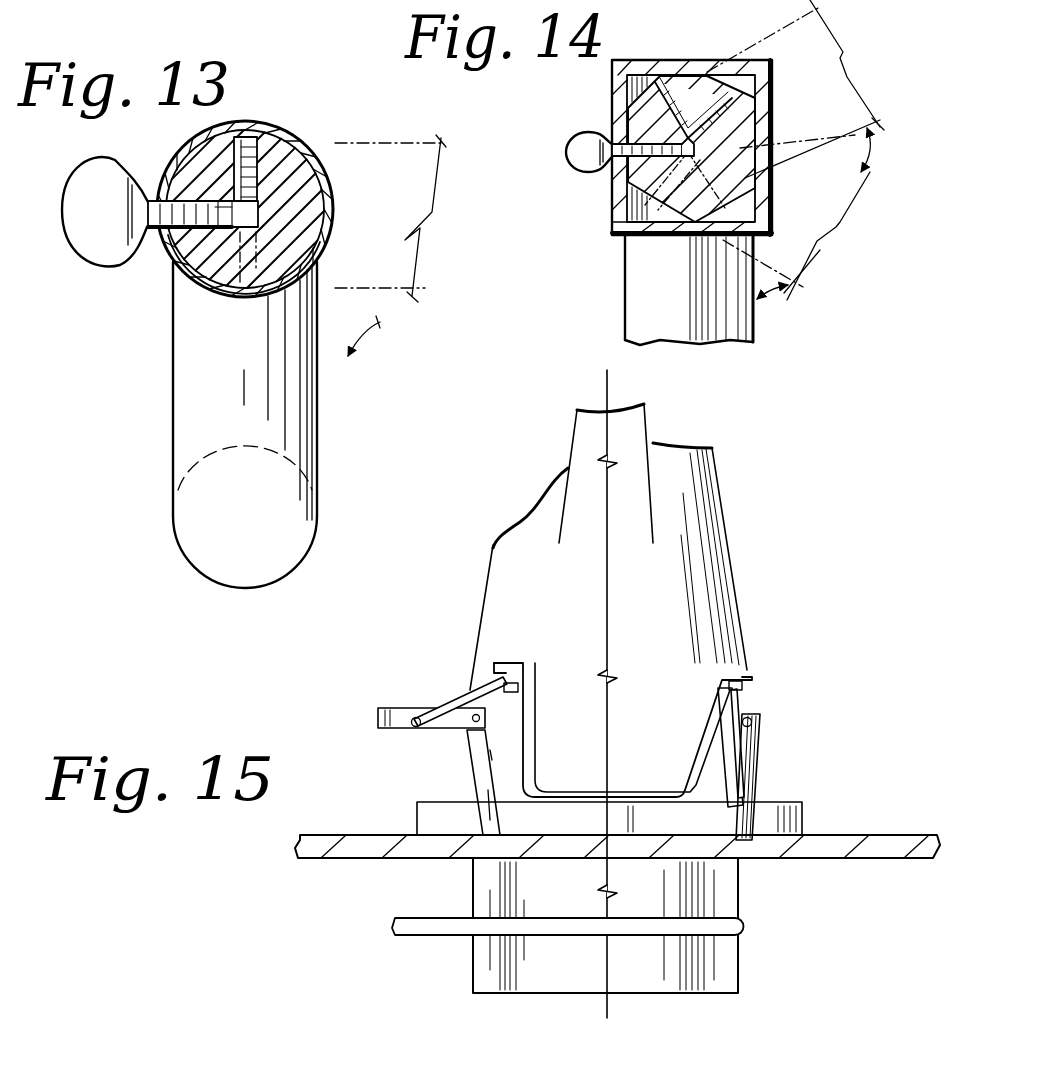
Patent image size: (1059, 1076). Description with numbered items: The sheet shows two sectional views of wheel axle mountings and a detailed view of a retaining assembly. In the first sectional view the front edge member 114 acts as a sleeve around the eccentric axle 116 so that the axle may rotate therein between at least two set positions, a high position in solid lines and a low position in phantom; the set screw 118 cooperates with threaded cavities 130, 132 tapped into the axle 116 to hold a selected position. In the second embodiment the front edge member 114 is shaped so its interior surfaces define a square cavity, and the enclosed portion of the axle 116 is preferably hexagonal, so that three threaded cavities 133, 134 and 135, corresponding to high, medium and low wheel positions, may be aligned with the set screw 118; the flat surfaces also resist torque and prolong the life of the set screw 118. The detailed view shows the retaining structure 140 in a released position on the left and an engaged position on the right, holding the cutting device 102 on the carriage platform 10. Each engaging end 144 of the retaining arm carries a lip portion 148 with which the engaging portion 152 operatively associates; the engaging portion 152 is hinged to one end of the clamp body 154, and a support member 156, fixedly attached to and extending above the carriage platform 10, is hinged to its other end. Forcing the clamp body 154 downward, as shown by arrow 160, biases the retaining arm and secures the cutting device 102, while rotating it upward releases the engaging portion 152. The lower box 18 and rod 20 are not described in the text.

In FIG. 15, the carriage platform 10 is at (410, 857).
In FIG. 15, the lower housing box 18 is at (740, 960).
In FIG. 15, the support rod 20 is at (447, 928).
In FIG. 15, the cutting device 102 is at (477, 627).
In FIG. 13, the front edge member 114 is at (197, 147).
In FIG. 14, the front edge member 114 is at (620, 114).
In FIG. 13, the eccentric axle 116 is at (392, 140).
In FIG. 14, the eccentric axle 116 is at (694, 74).
In FIG. 13, the set screw 118 is at (103, 250).
In FIG. 14, the set screw 118 is at (576, 168).
In FIG. 13, the threaded cavity 130 is at (245, 148).
In FIG. 13, the threaded cavity 132 is at (212, 290).
In FIG. 14, the threaded cavity 133 is at (616, 223).
In FIG. 14, the threaded cavity 134 is at (668, 78).
In FIG. 14, the threaded cavity 135 is at (766, 100).
In FIG. 15, the retaining structure 140 is at (400, 692).
In FIG. 15, the engaging end 144 is at (528, 671).
In FIG. 15, the lip portion 148 is at (517, 693).
In FIG. 15, the engaging portion 152 is at (470, 690).
In FIG. 15, the clamp body 154 is at (760, 772).
In FIG. 15, the support member 156 is at (480, 768).
In FIG. 15, the arrow 160 is at (372, 782).